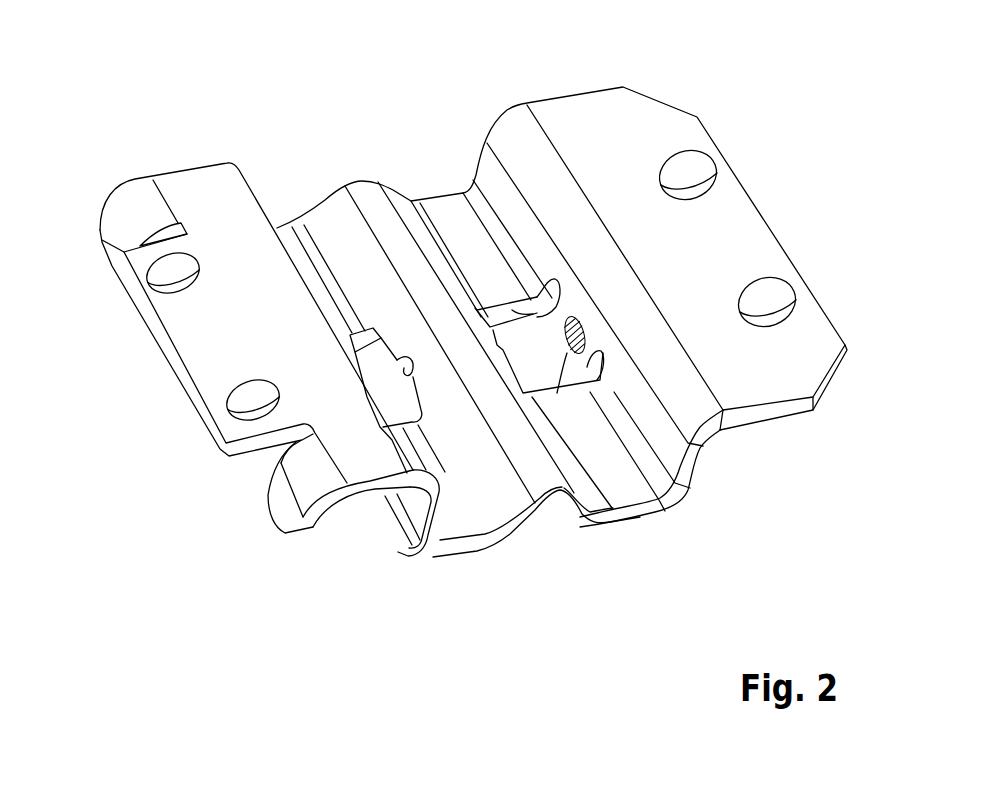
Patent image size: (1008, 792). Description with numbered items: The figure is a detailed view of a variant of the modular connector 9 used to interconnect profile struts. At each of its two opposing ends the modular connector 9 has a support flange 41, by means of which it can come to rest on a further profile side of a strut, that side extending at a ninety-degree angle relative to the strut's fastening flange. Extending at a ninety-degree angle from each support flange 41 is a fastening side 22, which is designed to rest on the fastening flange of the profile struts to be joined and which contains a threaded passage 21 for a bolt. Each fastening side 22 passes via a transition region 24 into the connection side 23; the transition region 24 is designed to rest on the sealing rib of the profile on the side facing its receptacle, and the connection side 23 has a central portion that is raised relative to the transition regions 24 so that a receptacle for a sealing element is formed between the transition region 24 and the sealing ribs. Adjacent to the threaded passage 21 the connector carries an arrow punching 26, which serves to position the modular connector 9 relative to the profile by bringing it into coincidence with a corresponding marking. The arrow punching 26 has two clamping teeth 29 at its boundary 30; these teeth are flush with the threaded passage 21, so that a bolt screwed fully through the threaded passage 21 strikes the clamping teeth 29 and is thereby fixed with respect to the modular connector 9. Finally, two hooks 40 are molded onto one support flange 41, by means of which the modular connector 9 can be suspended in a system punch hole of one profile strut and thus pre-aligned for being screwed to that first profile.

The modular connector 9 is at (163, 118).
The threaded passage 21 is at (585, 368).
The fastening side 22 is at (423, 510).
The connection side 23 is at (357, 174).
The transition region 24 is at (420, 567).
The arrow punching 26 is at (407, 377).
The clamping tooth 29 is at (405, 366).
The boundary 30 is at (538, 292).
The hook 40 is at (130, 203).
The support flange 41 is at (193, 343).